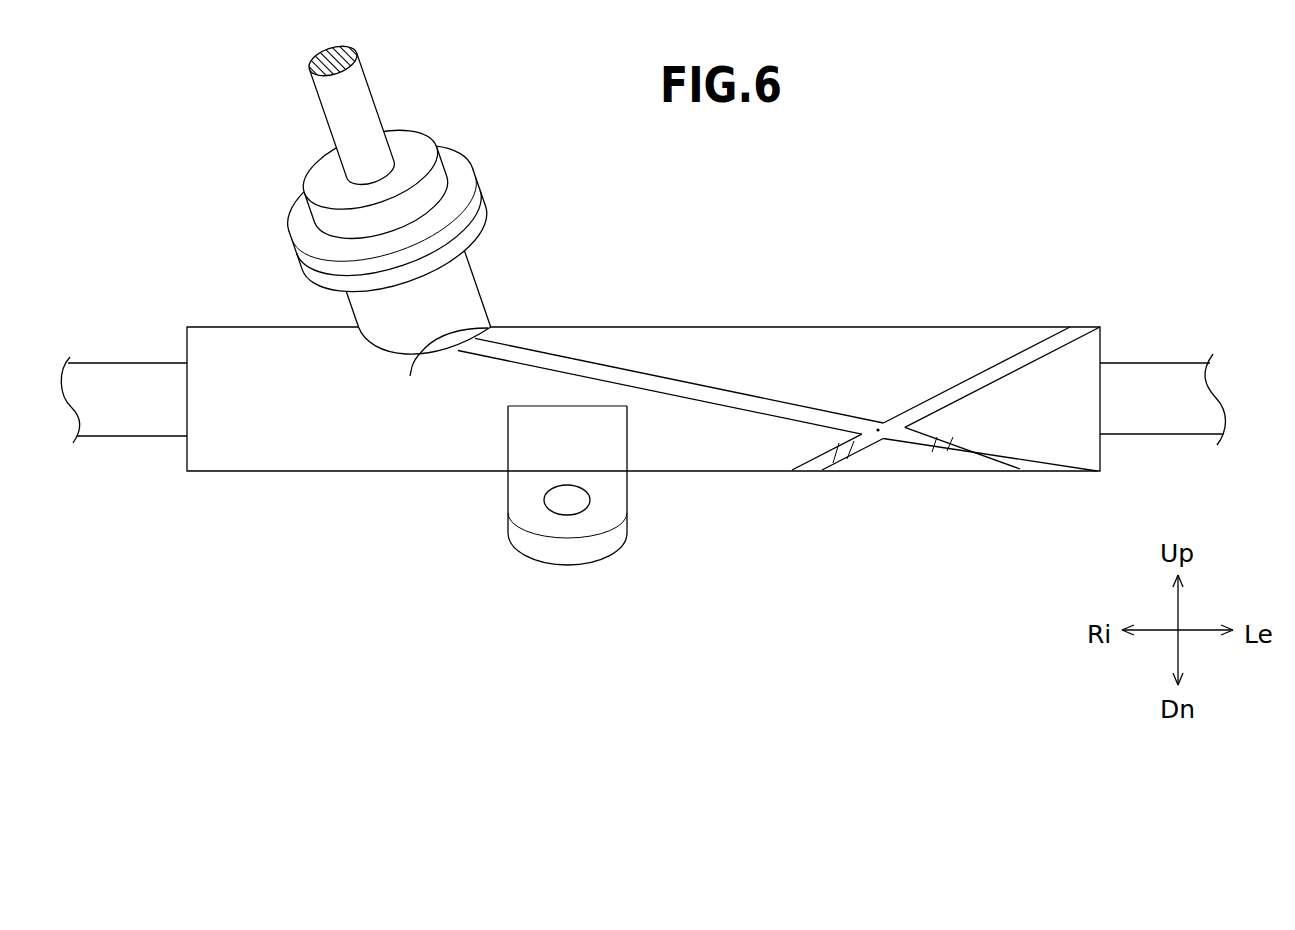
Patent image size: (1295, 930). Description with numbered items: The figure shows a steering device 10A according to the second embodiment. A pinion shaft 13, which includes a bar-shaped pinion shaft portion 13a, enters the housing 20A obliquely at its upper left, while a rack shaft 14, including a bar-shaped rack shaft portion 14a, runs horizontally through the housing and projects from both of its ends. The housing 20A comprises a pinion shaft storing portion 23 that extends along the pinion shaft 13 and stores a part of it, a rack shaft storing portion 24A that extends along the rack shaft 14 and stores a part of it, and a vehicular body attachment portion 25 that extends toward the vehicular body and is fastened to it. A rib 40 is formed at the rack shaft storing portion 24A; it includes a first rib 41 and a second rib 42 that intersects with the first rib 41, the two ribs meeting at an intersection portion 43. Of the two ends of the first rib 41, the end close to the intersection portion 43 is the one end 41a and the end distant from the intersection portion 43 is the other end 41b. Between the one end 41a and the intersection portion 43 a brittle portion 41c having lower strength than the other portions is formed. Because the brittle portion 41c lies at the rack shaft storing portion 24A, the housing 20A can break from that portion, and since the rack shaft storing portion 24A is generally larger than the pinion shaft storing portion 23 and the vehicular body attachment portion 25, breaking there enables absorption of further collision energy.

The steering device 10A is at (962, 106).
The pinion shaft 13 is at (400, 104).
The pinion shaft portion 13a is at (370, 93).
The rack shaft 14 is at (643, 366).
The rack shaft portion 14a is at (1146, 362).
The housing 20A is at (727, 325).
The pinion shaft storing portion 23 is at (460, 282).
The rack shaft storing portion 24A is at (645, 347).
The vehicular body attachment portion 25 is at (568, 553).
The rib 40 is at (947, 277).
The first rib 41 is at (763, 400).
The one end 41a is at (1055, 475).
The other end 41b is at (427, 372).
The brittle portion 41c is at (937, 447).
The second rib 42 is at (963, 377).
The intersection portion 43 is at (878, 430).